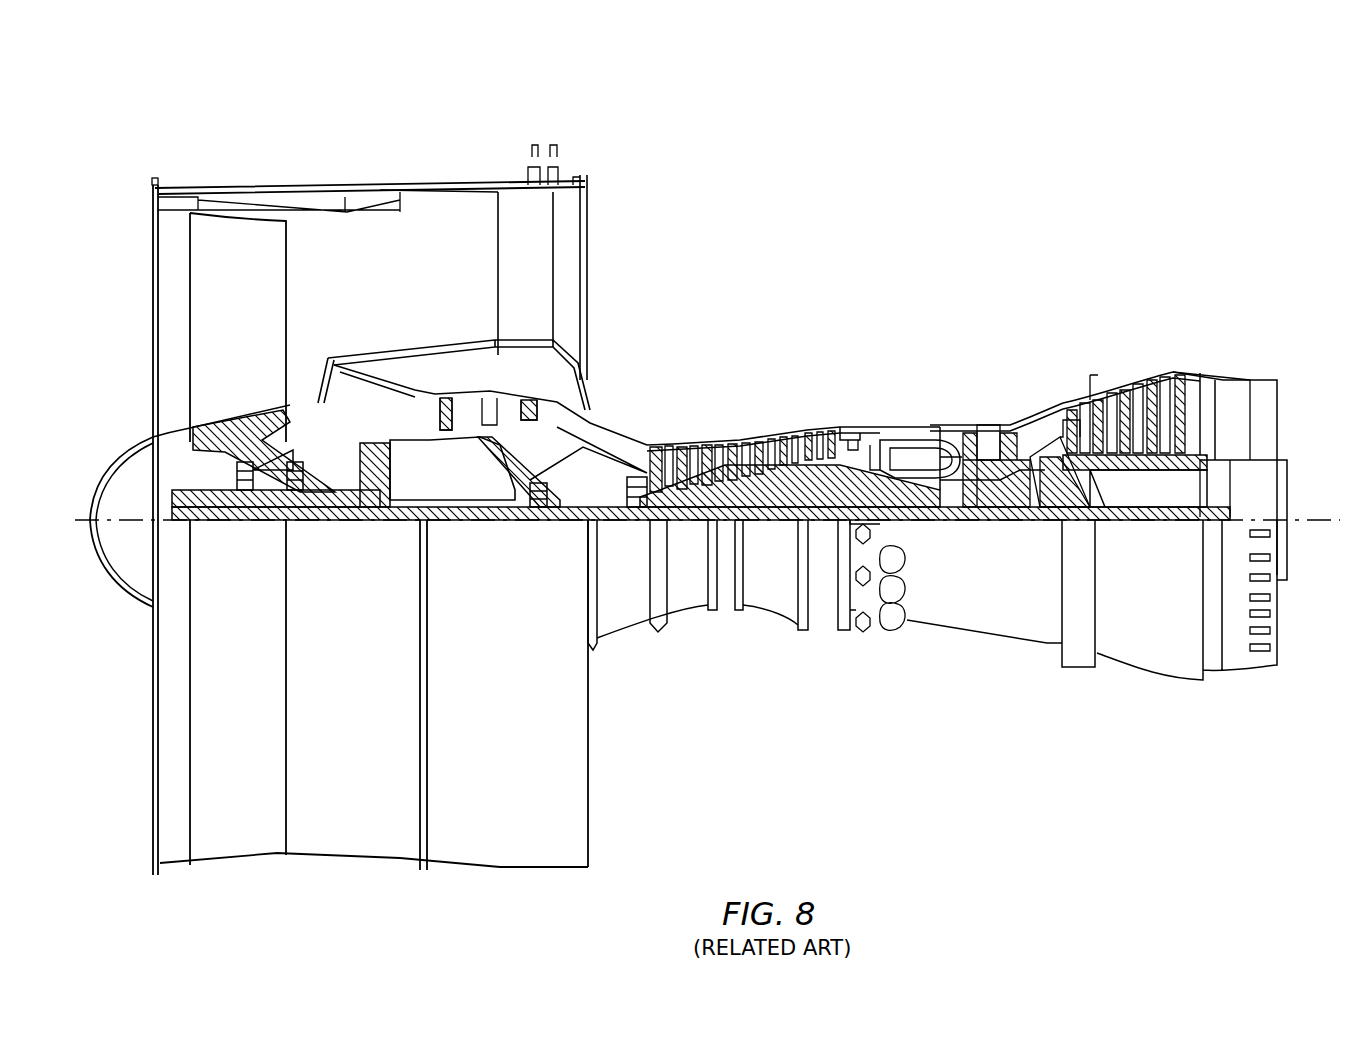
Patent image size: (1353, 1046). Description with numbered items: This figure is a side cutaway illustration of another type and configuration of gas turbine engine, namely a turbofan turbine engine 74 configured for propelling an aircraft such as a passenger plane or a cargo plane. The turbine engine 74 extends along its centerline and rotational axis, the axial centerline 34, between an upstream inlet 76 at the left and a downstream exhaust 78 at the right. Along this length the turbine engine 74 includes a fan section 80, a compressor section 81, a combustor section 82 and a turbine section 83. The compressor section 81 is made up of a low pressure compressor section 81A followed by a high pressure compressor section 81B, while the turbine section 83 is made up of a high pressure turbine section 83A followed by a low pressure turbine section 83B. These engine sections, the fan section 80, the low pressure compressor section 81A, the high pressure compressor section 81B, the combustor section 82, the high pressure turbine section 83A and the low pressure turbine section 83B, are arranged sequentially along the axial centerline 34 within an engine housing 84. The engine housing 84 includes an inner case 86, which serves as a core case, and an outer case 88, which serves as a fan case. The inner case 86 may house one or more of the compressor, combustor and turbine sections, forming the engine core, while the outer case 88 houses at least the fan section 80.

The axial centerline 34 is at (1338, 526).
The turbine engine 74 is at (118, 166).
The upstream inlet 76 is at (153, 265).
The downstream exhaust 78 is at (1278, 412).
The fan section 80 is at (335, 158).
The compressor section 81 is at (822, 97).
The low pressure compressor section 81A is at (588, 146).
The high pressure compressor section 81B is at (822, 353).
The combustor section 82 is at (950, 353).
The turbine section 83 is at (1232, 277).
The high pressure turbine section 83A is at (1040, 353).
The low pressure turbine section 83B is at (1232, 353).
The engine housing 84 is at (620, 652).
The inner case 86 is at (822, 630).
The outer case 88 is at (540, 868).